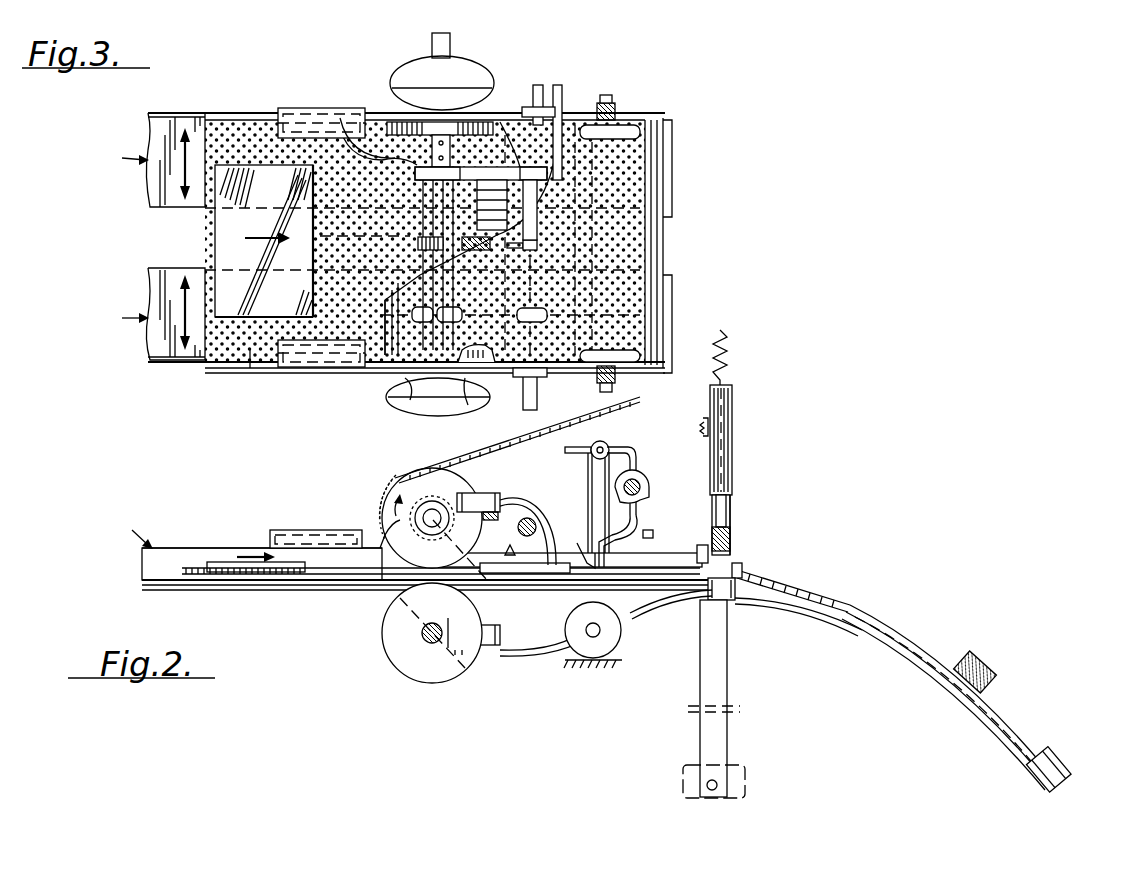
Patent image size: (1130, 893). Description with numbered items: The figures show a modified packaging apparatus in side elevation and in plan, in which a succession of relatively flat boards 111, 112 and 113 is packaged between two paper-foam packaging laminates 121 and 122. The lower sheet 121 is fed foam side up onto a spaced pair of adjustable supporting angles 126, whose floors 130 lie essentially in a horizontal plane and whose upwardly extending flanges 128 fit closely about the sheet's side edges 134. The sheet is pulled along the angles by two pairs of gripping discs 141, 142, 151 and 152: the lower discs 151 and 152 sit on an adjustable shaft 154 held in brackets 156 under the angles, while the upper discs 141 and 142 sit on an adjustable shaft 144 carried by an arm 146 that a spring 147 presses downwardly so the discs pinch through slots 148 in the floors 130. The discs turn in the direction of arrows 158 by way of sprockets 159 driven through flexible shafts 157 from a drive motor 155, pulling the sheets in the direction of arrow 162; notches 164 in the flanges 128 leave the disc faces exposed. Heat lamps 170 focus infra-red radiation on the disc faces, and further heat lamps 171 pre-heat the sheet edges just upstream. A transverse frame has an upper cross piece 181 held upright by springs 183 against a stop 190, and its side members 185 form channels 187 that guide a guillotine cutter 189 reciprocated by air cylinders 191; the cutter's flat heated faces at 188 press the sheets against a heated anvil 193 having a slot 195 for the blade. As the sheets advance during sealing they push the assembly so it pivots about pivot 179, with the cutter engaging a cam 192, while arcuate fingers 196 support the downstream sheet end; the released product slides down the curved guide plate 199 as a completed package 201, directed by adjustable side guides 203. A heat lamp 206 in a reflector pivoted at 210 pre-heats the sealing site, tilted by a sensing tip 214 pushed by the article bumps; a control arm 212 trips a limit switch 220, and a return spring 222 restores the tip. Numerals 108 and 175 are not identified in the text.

In FIG. 2, the rocker arm 108 is at (647, 480).
In FIG. 2, the flat board 111 is at (820, 605).
In FIG. 3, the flat board 112 is at (566, 186).
In FIG. 2, the flat board 112 is at (547, 582).
In FIG. 3, the flat board 113 is at (230, 238).
In FIG. 2, the flat board 113 is at (223, 563).
In FIG. 3, the packaging laminate 121 is at (250, 350).
In FIG. 2, the packaging laminate 121 is at (345, 588).
In FIG. 3, the packaging laminate 122 is at (400, 275).
In FIG. 3, the supporting angle 126 is at (117, 233).
In FIG. 2, the supporting angle 126 is at (120, 531).
In FIG. 3, the flange 128 is at (170, 113).
In FIG. 2, the flange 128 is at (174, 558).
In FIG. 3, the floor 130 is at (177, 183).
In FIG. 2, the floor 130 is at (150, 560).
In FIG. 3, the side edge 134 is at (240, 117).
In FIG. 3, the gripping disc 141 is at (400, 124).
In FIG. 2, the gripping disc 141 is at (398, 486).
In FIG. 3, the gripping disc 142 is at (380, 365).
In FIG. 3, the adjustable shaft 144 is at (425, 241).
In FIG. 3, the arm 146 is at (490, 168).
In FIG. 2, the arm 146 is at (522, 478).
In FIG. 2, the spring 147 is at (480, 540).
In FIG. 3, the slot 148 is at (388, 126).
In FIG. 2, the slot 148 is at (496, 576).
In FIG. 2, the gripping disc 151 is at (400, 657).
In FIG. 3, the gripping disc 152 is at (468, 372).
In FIG. 2, the adjustable shaft 154 is at (418, 636).
In FIG. 2, the drive motor 155 is at (608, 632).
In FIG. 3, the bracket 156 is at (480, 88).
In FIG. 2, the bracket 156 is at (386, 585).
In FIG. 3, the flexible shaft 157 is at (558, 104).
In FIG. 2, the flexible shaft 157 is at (545, 528).
In FIG. 2, the arrow 158 is at (390, 502).
In FIG. 2, the sprocket 159 is at (455, 538).
In FIG. 3, the arrow 162 is at (252, 236).
In FIG. 2, the arrow 162 is at (257, 553).
In FIG. 3, the notch 164 is at (412, 123).
In FIG. 2, the notch 164 is at (375, 543).
In FIG. 3, the heat lamp 170 is at (463, 83).
In FIG. 2, the heat lamp 170 is at (460, 680).
In FIG. 3, the heat lamp 171 is at (318, 120).
In FIG. 2, the heat lamp 171 is at (316, 536).
In FIG. 2, the post 175 is at (734, 510).
In FIG. 2, the pivot 179 is at (718, 785).
In FIG. 2, the upper cross piece 181 is at (738, 375).
In FIG. 2, the spring 183 is at (735, 342).
In FIG. 2, the side member 185 is at (716, 683).
In FIG. 2, the channel 187 is at (713, 512).
In FIG. 2, the side of cutting blade 188 is at (728, 543).
In FIG. 2, the guillotine cutter 189 is at (730, 548).
In FIG. 2, the stop 190 is at (703, 427).
In FIG. 2, the air cylinder 191 is at (740, 421).
In FIG. 2, the cam 192 is at (745, 570).
In FIG. 2, the anvil 193 is at (730, 600).
In FIG. 2, the slot 195 is at (718, 602).
In FIG. 2, the arcuate finger 196 is at (683, 608).
In FIG. 2, the curved guide plate 199 is at (967, 699).
In FIG. 2, the completed package 201 is at (1030, 748).
In FIG. 2, the side guide 203 is at (957, 667).
In FIG. 2, the heat lamp 206 is at (648, 489).
In FIG. 2, the pivot mounting 210 is at (624, 438).
In FIG. 2, the control arm 212 is at (628, 541).
In FIG. 2, the sensing tip 214 is at (587, 565).
In FIG. 2, the limit switch 220 is at (668, 524).
In FIG. 2, the return spring 222 is at (598, 492).